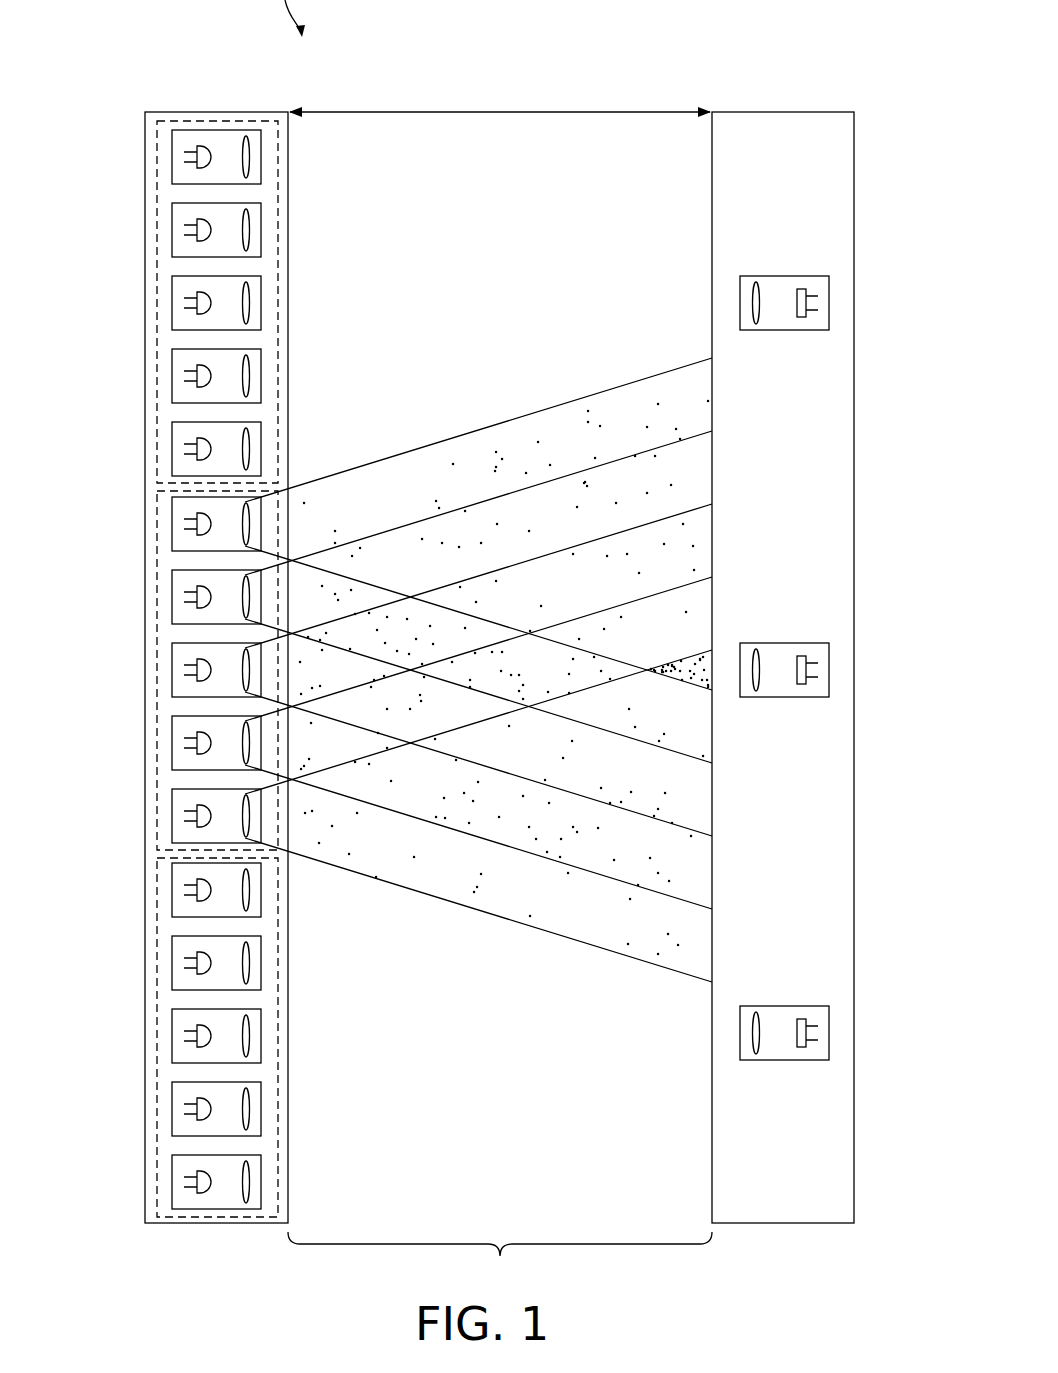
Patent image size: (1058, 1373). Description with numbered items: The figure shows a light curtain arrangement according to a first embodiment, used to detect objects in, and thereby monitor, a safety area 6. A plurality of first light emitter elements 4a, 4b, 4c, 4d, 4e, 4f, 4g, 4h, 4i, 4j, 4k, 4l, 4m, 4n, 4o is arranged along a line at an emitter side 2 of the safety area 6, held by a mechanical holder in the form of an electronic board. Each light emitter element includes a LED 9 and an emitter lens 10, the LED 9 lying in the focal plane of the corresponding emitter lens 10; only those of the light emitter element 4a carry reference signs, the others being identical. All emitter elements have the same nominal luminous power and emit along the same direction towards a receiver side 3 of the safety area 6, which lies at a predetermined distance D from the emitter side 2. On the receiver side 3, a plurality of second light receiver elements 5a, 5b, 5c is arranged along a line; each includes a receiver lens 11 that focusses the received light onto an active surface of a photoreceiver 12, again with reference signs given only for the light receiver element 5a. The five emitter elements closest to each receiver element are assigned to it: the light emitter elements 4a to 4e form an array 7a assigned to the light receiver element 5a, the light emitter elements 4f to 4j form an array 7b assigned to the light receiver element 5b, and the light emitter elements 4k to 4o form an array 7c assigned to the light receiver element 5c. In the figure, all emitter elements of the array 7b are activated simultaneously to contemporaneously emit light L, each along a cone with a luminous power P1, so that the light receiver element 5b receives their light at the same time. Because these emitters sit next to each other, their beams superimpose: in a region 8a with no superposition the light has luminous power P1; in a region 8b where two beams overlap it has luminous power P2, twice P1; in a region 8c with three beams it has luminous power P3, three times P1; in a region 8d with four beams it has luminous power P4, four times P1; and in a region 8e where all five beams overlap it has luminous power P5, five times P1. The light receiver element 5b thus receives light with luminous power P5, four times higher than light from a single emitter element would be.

The emitter side 2 is at (200, 1238).
The receiver side 3 is at (810, 1238).
The light emitter element 4a is at (184, 127).
The light emitter element 4b is at (172, 230).
The light emitter element 4c is at (172, 303).
The light emitter element 4d is at (172, 376).
The light emitter element 4e is at (172, 449).
The light emitter element 4f is at (172, 524).
The light emitter element 4g is at (172, 597).
The light emitter element 4h is at (172, 670).
The light emitter element 4i is at (172, 743).
The light emitter element 4j is at (172, 816).
The light emitter element 4k is at (172, 890).
The light emitter element 4l is at (172, 963).
The light emitter element 4m is at (172, 1036).
The light emitter element 4n is at (172, 1109).
The light emitter element 4o is at (172, 1182).
The light receiver element 5a is at (828, 263).
The light receiver element 5b is at (829, 670).
The light receiver element 5c is at (829, 1035).
The safety area 6 is at (500, 1260).
The array 7a is at (157, 290).
The array 7b is at (157, 660).
The array 7c is at (157, 1022).
The region 8a is at (547, 430).
The region 8b is at (705, 478).
The region 8c is at (705, 548).
The region 8d is at (697, 602).
The region 8e is at (710, 676).
The LED 9 is at (211, 145).
The emitter lens 10 is at (249, 136).
The receiver lens 11 is at (756, 282).
The photoreceiver 12 is at (818, 317).
The predetermined distance D is at (500, 100).
The light L is at (400, 455).
The luminous power P1 is at (458, 476).
The luminous power P2 is at (530, 526).
The luminous power P3 is at (574, 586).
The luminous power P4 is at (618, 629).
The luminous power P5 is at (694, 672).